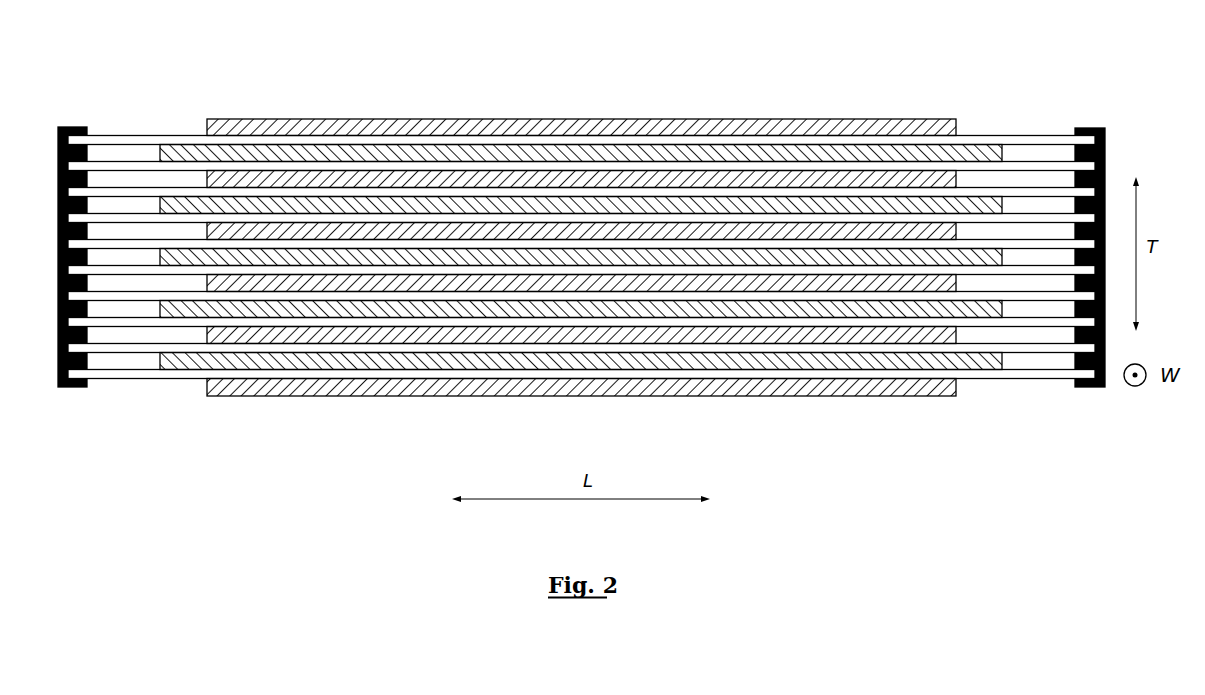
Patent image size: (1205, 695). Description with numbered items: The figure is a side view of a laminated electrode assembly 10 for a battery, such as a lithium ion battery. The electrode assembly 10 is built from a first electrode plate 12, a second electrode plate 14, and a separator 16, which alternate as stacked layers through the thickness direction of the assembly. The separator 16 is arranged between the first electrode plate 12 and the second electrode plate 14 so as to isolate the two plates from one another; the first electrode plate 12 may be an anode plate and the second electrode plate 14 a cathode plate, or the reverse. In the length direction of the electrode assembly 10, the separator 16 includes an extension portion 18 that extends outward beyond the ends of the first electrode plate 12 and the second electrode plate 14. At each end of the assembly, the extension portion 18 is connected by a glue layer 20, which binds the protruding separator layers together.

The electrode assembly 10 is at (581, 238).
The first electrode plate 12 is at (722, 142).
The second electrode plate 14 is at (298, 205).
The separator 16 is at (572, 118).
The extension portion 18 is at (130, 136).
The glue layer 20 is at (73, 126).